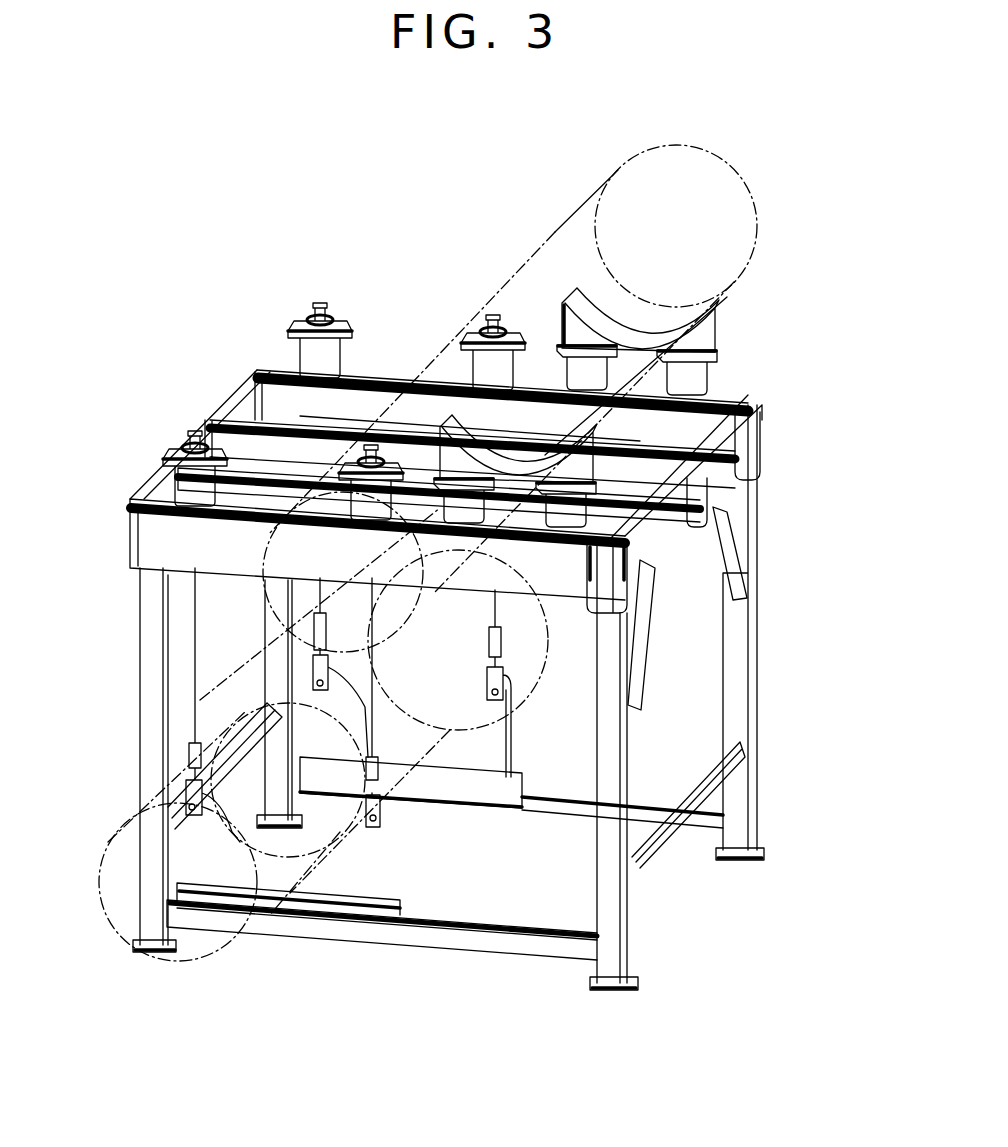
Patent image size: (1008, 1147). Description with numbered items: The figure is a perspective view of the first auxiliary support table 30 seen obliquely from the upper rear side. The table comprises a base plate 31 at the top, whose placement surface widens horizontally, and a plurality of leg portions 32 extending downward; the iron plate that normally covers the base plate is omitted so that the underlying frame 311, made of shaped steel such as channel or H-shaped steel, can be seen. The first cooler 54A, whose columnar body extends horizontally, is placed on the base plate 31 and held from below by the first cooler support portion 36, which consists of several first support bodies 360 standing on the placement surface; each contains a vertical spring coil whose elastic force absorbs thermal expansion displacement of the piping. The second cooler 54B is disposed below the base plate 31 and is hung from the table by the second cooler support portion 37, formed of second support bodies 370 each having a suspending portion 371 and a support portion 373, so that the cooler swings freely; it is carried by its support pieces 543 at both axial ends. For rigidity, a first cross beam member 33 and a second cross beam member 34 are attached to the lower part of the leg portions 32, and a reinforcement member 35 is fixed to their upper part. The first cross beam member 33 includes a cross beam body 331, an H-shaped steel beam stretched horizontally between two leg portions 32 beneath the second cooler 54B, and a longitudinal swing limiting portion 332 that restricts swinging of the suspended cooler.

The first auxiliary support table 30 is at (372, 270).
The base plate 31 is at (752, 396).
The frame 311 is at (366, 430).
The leg portions 32 is at (263, 627).
The first cross beam member 33 is at (392, 988).
The cross beam body 331 is at (283, 915).
The longitudinal swing limiting portion 332 is at (358, 912).
The second cross beam member 34 is at (235, 733).
The reinforcement member 35 is at (650, 632).
The first cooler support portion 36 is at (828, 428).
The first support bodies 360 is at (560, 452).
The second cooler support portion 37 is at (230, 323).
The second support bodies 370 is at (352, 500).
The suspending portion 371 is at (200, 622).
The support portion 373 is at (172, 482).
The support pieces 543 is at (378, 842).
The first cooler 54A is at (762, 197).
The second cooler 54B is at (168, 966).